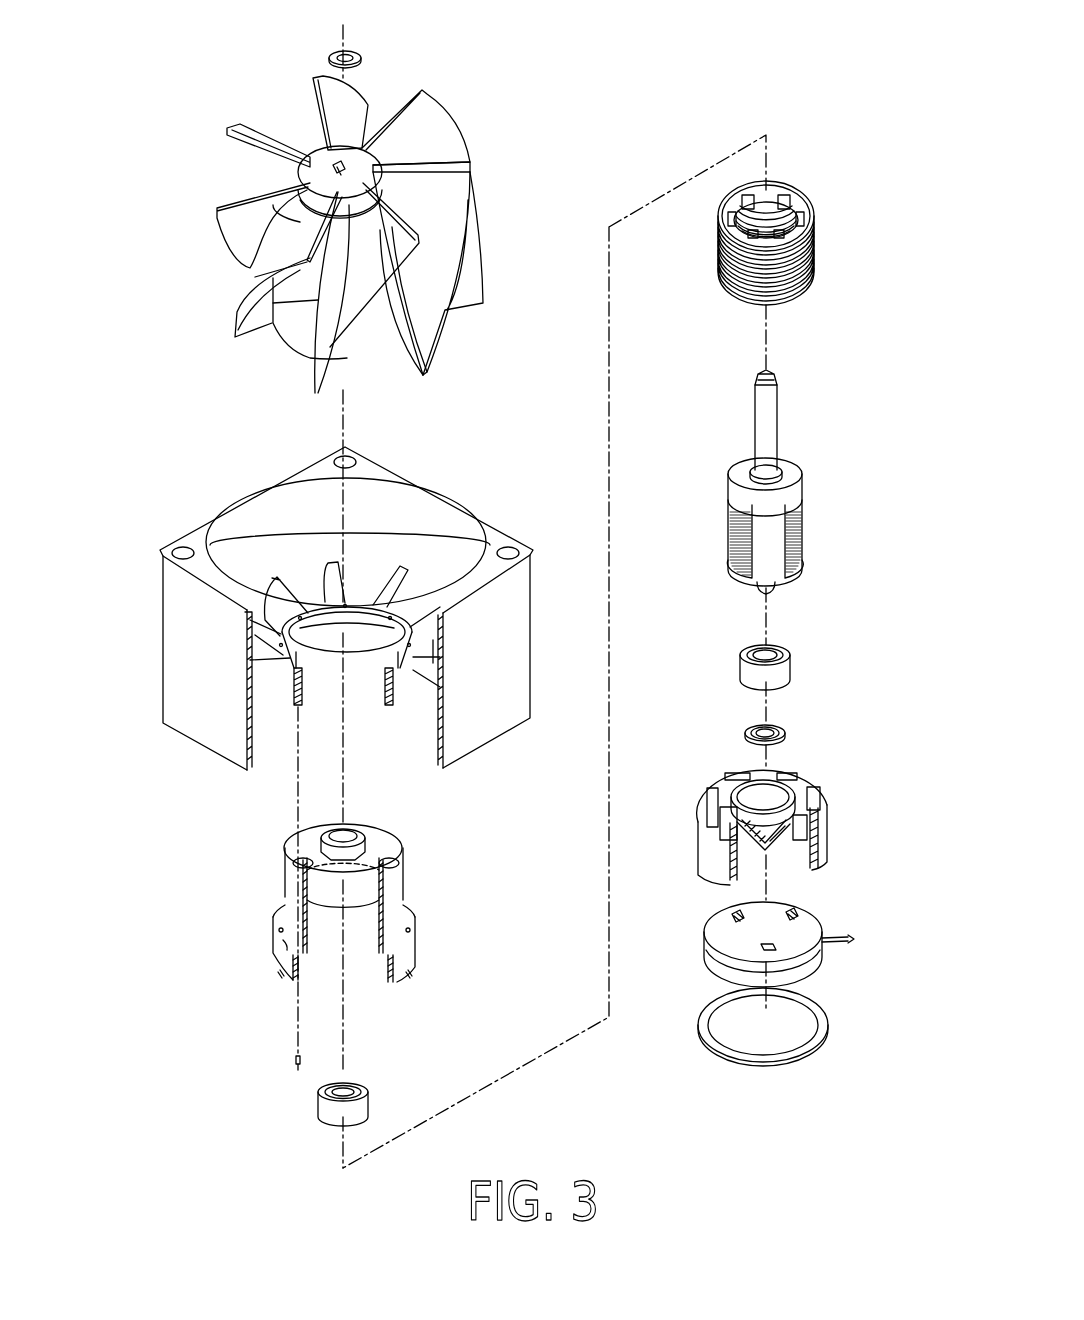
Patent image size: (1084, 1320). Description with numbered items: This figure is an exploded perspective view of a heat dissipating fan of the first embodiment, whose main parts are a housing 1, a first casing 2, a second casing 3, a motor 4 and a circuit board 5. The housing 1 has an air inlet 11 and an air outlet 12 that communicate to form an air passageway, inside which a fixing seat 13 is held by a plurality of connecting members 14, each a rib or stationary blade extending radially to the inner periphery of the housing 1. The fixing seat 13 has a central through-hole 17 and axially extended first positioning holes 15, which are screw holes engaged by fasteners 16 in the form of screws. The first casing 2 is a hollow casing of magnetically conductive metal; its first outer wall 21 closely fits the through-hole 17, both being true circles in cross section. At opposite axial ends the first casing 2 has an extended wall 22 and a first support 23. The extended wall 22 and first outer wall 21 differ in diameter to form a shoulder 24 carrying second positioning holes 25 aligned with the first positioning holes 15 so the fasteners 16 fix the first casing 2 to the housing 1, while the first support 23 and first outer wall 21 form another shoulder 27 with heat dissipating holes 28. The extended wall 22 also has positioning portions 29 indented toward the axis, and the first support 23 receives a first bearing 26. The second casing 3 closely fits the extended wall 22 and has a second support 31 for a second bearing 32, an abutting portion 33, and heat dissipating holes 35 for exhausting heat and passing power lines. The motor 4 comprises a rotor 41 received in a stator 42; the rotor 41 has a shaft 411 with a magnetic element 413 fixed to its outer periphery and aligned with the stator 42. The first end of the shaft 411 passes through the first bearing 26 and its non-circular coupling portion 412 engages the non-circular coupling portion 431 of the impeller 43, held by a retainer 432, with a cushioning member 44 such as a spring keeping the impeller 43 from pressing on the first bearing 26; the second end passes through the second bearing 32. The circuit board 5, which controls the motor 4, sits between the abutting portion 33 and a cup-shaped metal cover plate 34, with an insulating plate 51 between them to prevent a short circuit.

The housing 1 is at (317, 626).
The air inlet 11 is at (410, 482).
The air outlet 12 is at (267, 753).
The fixing seat 13 is at (250, 633).
The connecting members 14 is at (332, 582).
The first positioning holes 15 is at (296, 706).
The fasteners 16 is at (295, 1062).
The through-hole 17 is at (310, 627).
The first casing 2 is at (355, 950).
The first outer wall 21 is at (405, 887).
The extended wall 22 is at (407, 960).
The first support 23 is at (373, 850).
The shoulder 24 is at (287, 947).
The second positioning holes 25 is at (280, 925).
The first bearing 26 is at (367, 1097).
The shoulder 27 is at (293, 853).
The heat dissipating holes 28 is at (398, 862).
The positioning portions 29 is at (280, 975).
The second casing 3 is at (786, 833).
The second support 31 is at (820, 797).
The second bearing 32 is at (743, 667).
The abutting portion 33 is at (813, 873).
The cover plate 34 is at (822, 1035).
The heat dissipating holes 35 is at (822, 832).
The motor 4 is at (747, 387).
The rotor 41 is at (774, 463).
The shaft 411 is at (772, 422).
The coupling portion 412 is at (773, 377).
The magnetic element 413 is at (798, 518).
The stator 42 is at (723, 262).
The impeller 43 is at (367, 222).
The coupling portion 431 is at (338, 168).
The retainer 432 is at (358, 52).
The cushioning member 44 is at (780, 740).
The circuit board 5 is at (795, 951).
The insulating plate 51 is at (810, 967).